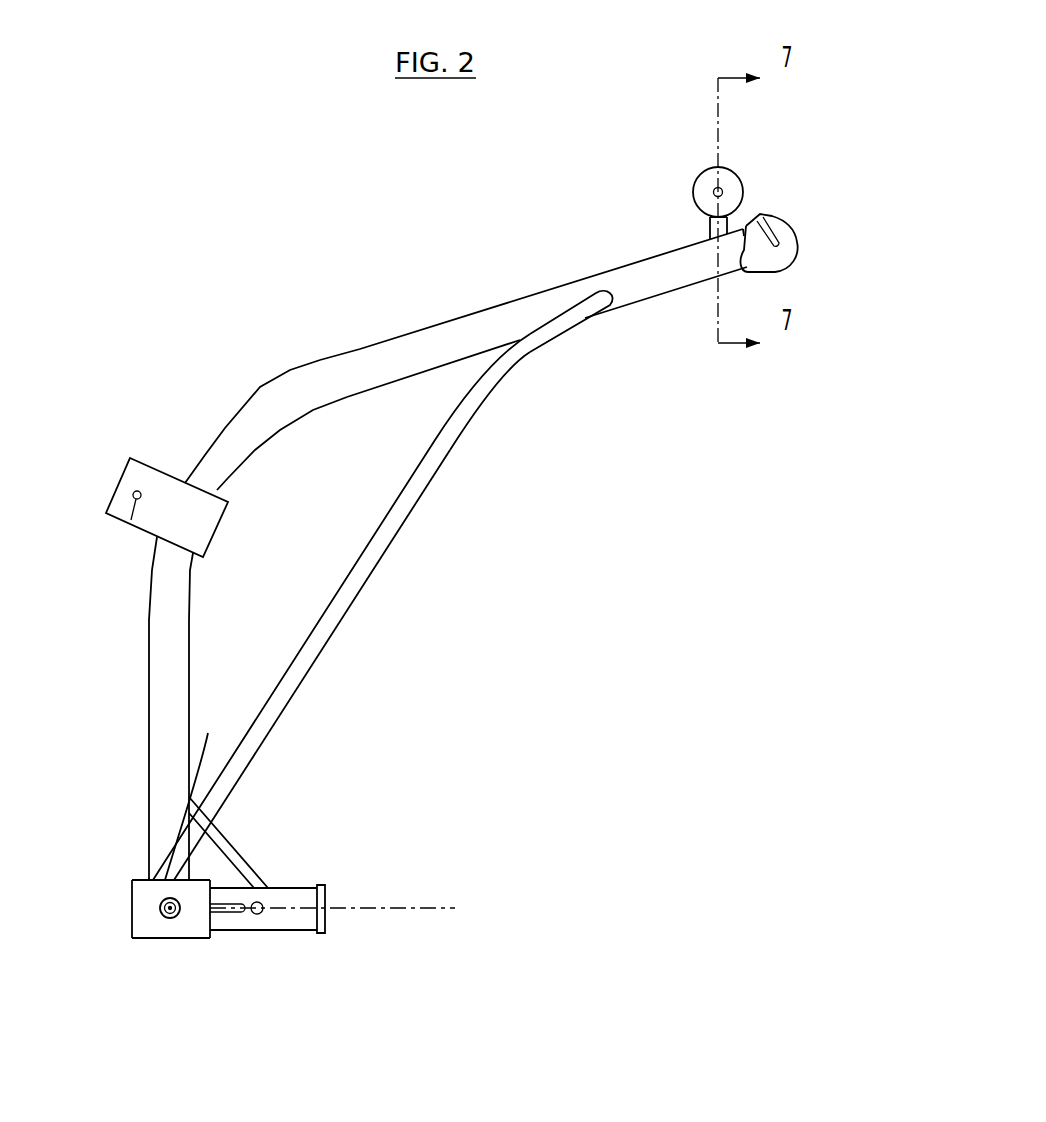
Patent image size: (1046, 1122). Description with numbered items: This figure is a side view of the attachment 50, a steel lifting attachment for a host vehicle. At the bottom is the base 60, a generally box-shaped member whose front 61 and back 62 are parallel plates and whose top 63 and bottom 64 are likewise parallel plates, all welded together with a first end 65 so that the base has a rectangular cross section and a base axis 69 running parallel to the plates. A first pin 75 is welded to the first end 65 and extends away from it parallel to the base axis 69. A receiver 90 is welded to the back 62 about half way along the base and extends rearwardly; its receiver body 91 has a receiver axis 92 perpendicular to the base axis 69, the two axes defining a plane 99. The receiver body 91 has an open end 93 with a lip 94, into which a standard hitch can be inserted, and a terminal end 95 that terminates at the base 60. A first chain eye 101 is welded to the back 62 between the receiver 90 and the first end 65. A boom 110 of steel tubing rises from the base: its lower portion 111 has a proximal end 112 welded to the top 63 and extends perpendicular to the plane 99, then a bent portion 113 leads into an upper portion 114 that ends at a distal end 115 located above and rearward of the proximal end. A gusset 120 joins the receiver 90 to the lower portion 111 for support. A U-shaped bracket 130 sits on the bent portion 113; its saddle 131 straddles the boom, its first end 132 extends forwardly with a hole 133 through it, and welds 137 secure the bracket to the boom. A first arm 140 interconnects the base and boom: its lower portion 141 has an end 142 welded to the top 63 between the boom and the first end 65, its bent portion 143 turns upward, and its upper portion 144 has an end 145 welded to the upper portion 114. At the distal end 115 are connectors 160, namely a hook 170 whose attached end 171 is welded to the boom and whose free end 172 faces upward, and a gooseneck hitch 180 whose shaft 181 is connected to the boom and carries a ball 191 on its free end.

The attachment 50 is at (170, 220).
The base 60 is at (141, 956).
The front 61 is at (132, 897).
The back 62 is at (212, 933).
The top 63 is at (145, 878).
The bottom 64 is at (183, 940).
The first end 65 is at (145, 912).
The base axis 69 is at (455, 905).
The first pin 75 is at (165, 915).
The receiver 90 is at (317, 875).
The receiver body 91 is at (297, 931).
The receiver axis 92 is at (171, 917).
The open end 93 is at (326, 897).
The lip 94 is at (325, 917).
The terminal end 95 is at (218, 878).
The plane 99 is at (457, 908).
The first chain eye 101 is at (262, 904).
The boom 110 is at (316, 348).
The lower portion 111 is at (148, 665).
The end 112 is at (150, 878).
The bent portion 113 is at (212, 438).
The upper portion 114 is at (393, 337).
The end 115 is at (741, 233).
The gusset 120 is at (233, 843).
The U-shaped bracket 130 is at (105, 480).
The saddle 131 is at (197, 526).
The first end 132 is at (112, 517).
The hole 133 is at (131, 520).
The welds 137 is at (212, 489).
The first arm 140 is at (440, 505).
The lower portion 141 is at (368, 592).
The end 142 is at (200, 790).
The bent portion 143 is at (500, 382).
The upper portion 144 is at (553, 343).
The end 145 is at (592, 291).
The connectors 160 is at (690, 165).
The hook 170 is at (810, 264).
The attached end 171 is at (744, 252).
The free end 172 is at (759, 215).
The gooseneck hitch 180 is at (683, 183).
The shaft 181 is at (709, 229).
The ball 191 is at (692, 200).